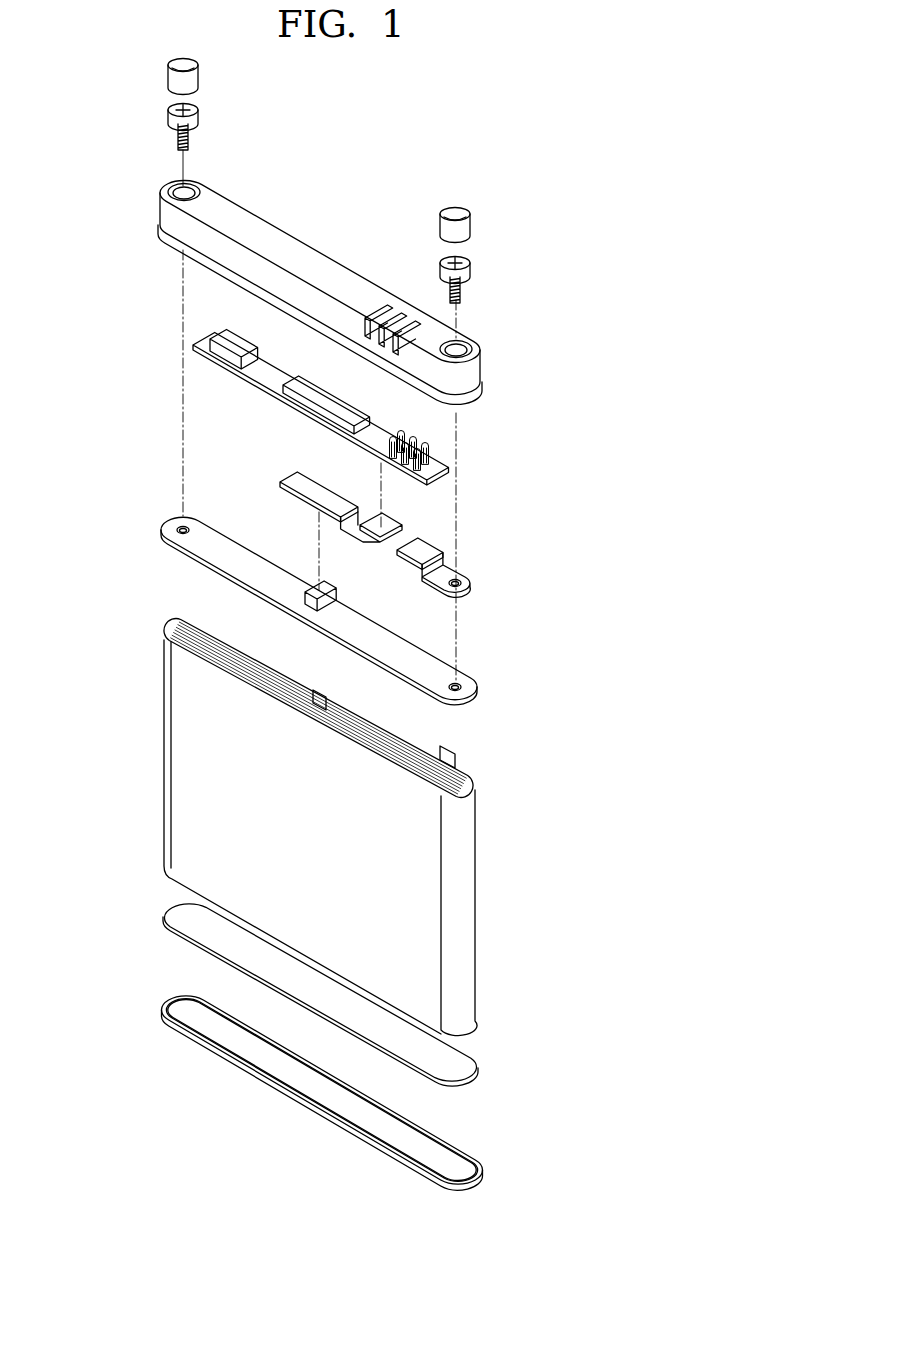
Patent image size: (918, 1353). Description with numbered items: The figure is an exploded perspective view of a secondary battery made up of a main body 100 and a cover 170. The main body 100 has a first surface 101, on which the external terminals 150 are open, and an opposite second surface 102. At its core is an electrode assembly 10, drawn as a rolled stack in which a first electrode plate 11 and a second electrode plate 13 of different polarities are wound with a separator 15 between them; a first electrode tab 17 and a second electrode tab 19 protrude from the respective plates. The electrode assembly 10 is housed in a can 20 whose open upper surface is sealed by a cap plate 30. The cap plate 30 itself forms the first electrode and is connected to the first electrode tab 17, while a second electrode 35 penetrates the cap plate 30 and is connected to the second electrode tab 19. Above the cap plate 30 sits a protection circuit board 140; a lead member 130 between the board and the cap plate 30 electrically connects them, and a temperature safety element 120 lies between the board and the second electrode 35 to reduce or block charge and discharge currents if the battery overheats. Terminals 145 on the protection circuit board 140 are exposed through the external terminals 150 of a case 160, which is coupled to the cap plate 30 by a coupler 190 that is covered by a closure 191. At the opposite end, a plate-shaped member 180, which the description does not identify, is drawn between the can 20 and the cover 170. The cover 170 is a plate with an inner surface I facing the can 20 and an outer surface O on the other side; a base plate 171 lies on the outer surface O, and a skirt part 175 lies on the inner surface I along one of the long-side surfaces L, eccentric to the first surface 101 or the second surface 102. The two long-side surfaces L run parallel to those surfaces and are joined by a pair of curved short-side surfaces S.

The main body 100 is at (328, 817).
The electrode assembly 10 is at (375, 711).
The first electrode plate 11 is at (474, 785).
The second electrode plate 13 is at (472, 779).
The separator 15 is at (472, 780).
The first electrode tab 17 is at (447, 758).
The second electrode tab 19 is at (318, 701).
The can 20 is at (467, 837).
The first surface 101 is at (192, 688).
The second surface 102 is at (335, 700).
The cap plate 30 is at (445, 668).
The second electrode 35 is at (326, 600).
The temperature safety element 120 is at (272, 460).
The lead member 130 is at (490, 566).
The protection circuit board 140 is at (369, 409).
The terminals 145 is at (432, 446).
The external terminals 150 is at (383, 308).
The case 160 is at (297, 243).
The cover 170 is at (305, 1071).
The base plate 171 is at (473, 1177).
The skirt part 175 is at (377, 1140).
The insulating sheet 180 is at (170, 907).
The coupler 190 is at (469, 280).
The closure 191 is at (469, 228).
The short-side surfaces S is at (173, 1010).
The long-side surfaces L is at (243, 1025).
The inner surface I is at (326, 1090).
The outer surface O is at (315, 1113).